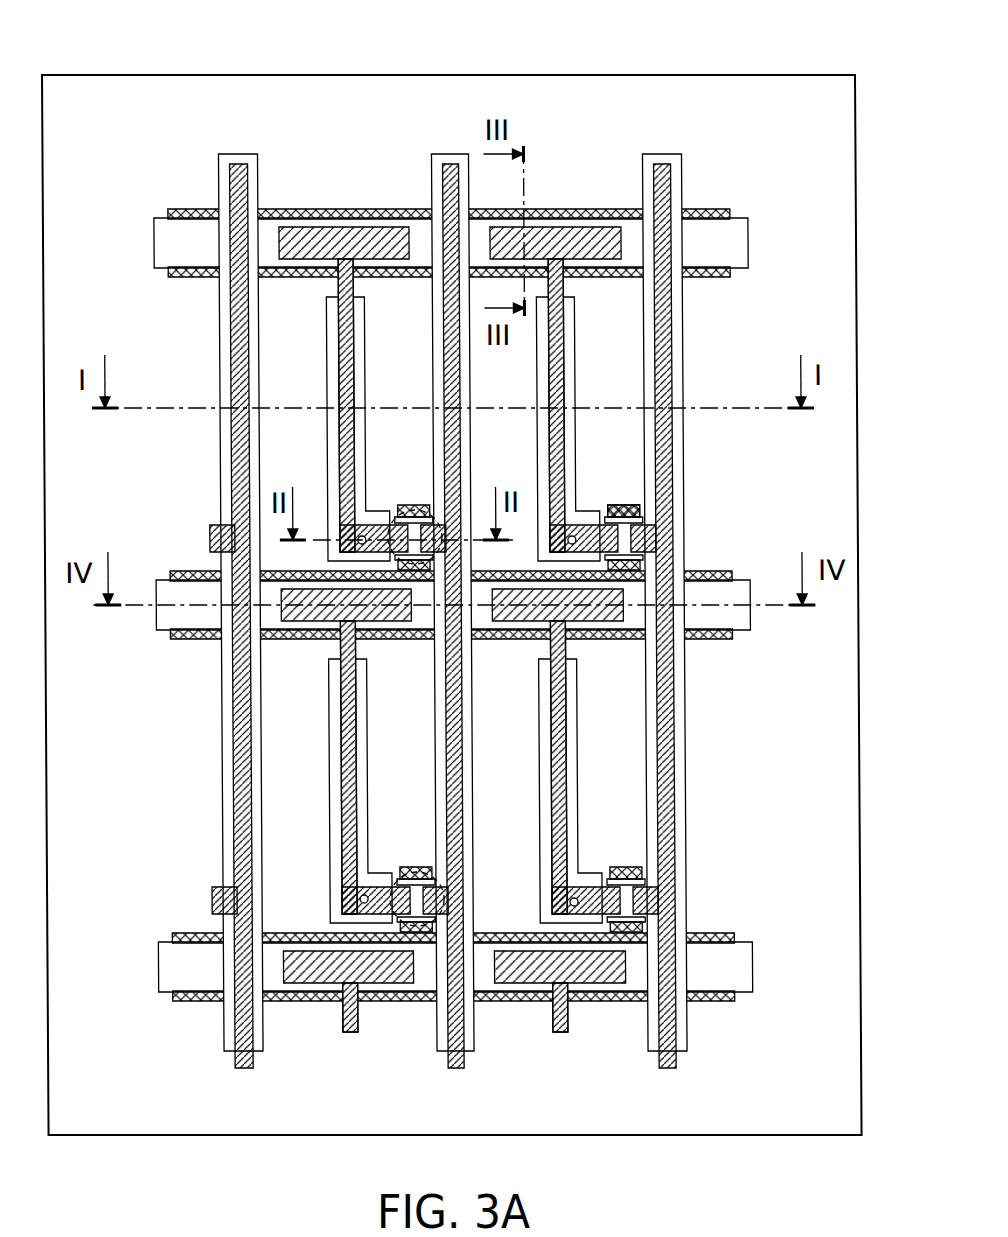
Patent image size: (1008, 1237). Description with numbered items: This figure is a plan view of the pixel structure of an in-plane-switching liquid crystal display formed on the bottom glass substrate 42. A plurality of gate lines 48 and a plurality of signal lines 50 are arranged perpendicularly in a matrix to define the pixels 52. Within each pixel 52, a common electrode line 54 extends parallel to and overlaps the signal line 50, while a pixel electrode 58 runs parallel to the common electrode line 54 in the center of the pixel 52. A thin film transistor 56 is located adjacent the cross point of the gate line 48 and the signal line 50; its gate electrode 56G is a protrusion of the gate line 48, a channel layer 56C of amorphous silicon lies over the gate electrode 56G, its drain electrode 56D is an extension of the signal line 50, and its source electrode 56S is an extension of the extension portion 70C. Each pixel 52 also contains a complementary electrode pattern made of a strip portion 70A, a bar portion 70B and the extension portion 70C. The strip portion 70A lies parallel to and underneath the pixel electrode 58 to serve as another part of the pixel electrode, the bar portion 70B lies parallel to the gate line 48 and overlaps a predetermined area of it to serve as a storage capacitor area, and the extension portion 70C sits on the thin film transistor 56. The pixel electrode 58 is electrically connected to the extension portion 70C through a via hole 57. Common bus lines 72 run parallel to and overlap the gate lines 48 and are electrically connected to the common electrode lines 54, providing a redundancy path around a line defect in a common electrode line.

The glass substrate 42 is at (122, 92).
The gate line 48 is at (715, 212).
The signal line 50 is at (683, 729).
The pixel 52 is at (610, 343).
The common electrode line 54 is at (680, 443).
The thin film transistor 56 is at (499, 741).
The source electrode 56S is at (395, 877).
The gate electrode 56G is at (413, 866).
The channel layer 56C is at (432, 872).
The drain electrode 56D is at (442, 904).
The via hole 57 is at (355, 899).
The pixel electrode 58 is at (568, 379).
The strip portion 70A is at (560, 313).
The bar portion 70B is at (596, 232).
The extension portion 70C is at (597, 516).
The common bus line 72 is at (738, 240).